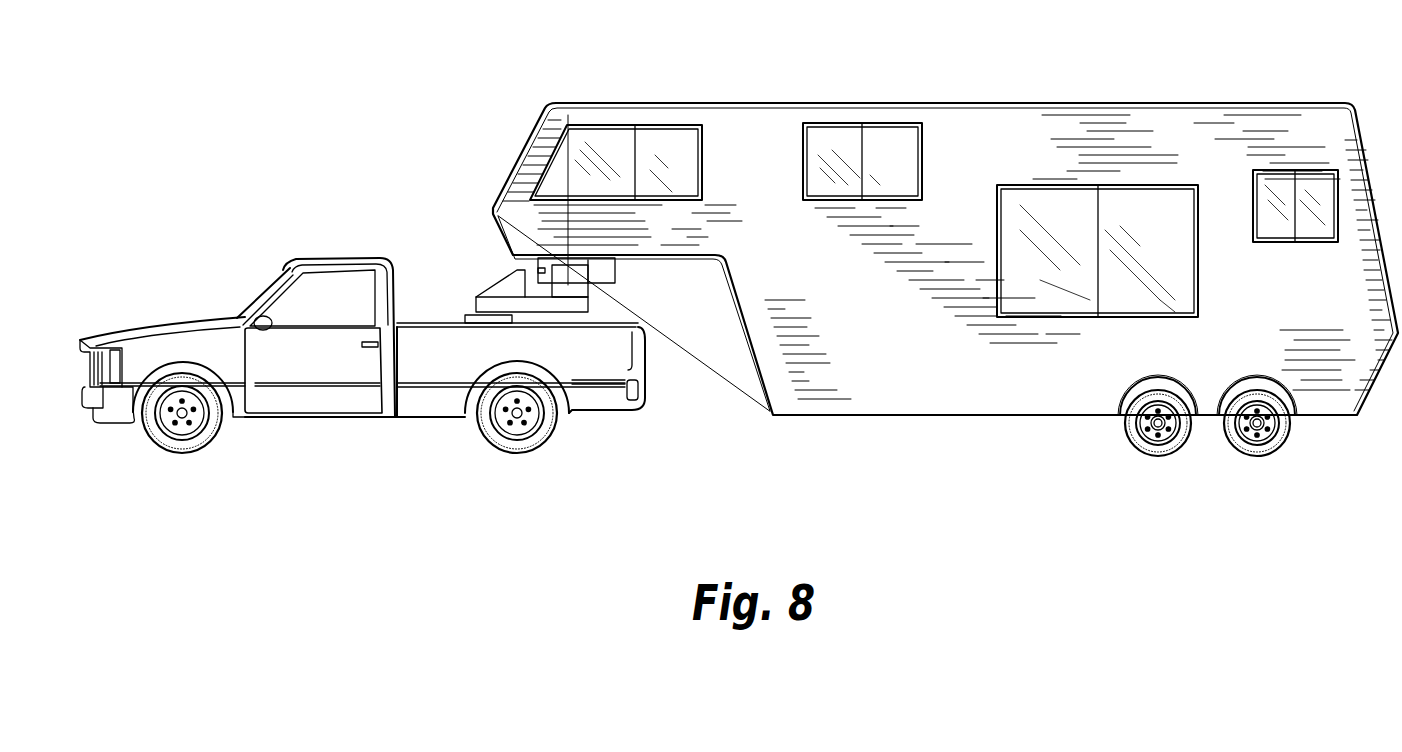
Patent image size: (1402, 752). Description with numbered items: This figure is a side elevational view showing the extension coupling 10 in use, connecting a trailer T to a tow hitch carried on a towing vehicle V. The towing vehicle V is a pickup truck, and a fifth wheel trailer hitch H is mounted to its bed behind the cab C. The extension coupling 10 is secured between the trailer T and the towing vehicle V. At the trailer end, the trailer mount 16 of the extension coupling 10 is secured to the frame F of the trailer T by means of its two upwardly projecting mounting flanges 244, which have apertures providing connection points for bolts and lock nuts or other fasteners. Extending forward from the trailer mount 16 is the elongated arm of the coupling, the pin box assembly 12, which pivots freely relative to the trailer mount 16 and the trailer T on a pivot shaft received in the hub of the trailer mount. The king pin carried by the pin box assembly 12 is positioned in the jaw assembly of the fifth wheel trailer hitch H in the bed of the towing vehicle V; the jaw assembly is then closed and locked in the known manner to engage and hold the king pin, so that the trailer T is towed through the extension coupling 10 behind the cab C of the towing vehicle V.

The towing vehicle V is at (420, 402).
The cab C is at (337, 258).
The trailer T is at (1047, 133).
The fifth wheel trailer hitch H is at (477, 322).
The frame F is at (608, 273).
The extension coupling 10 is at (488, 342).
The pin box assembly 12 is at (488, 270).
The trailer mount 16 is at (602, 297).
The mounting flanges 244 is at (567, 288).